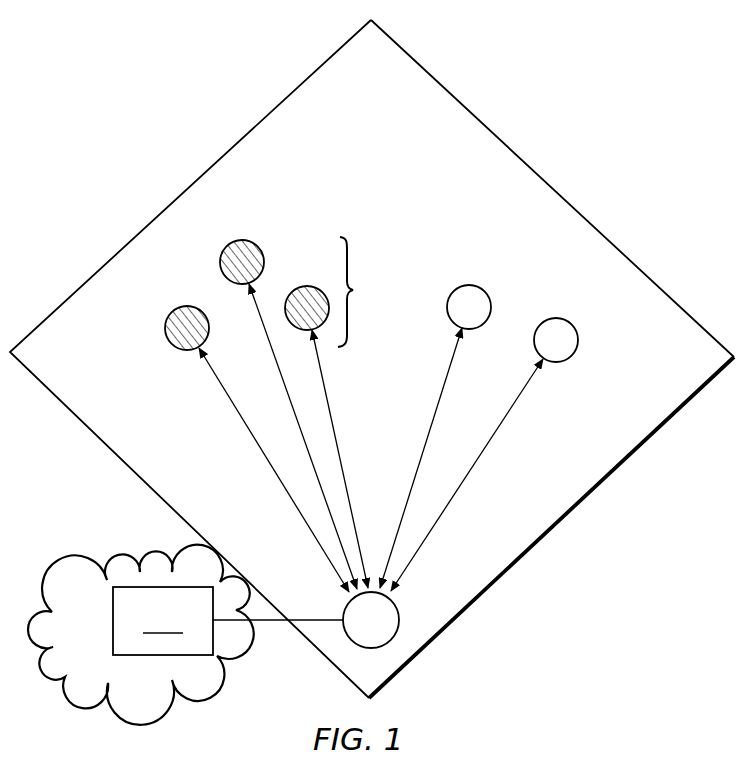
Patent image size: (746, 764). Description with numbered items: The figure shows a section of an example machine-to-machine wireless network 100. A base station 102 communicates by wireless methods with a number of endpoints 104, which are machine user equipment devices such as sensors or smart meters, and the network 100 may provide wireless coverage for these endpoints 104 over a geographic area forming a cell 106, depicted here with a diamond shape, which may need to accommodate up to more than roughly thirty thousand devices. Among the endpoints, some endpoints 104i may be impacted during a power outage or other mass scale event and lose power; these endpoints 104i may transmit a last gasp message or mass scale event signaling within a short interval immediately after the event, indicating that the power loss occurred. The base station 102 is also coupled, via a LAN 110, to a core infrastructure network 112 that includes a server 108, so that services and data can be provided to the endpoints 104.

The machine-to-machine wireless network 100 is at (224, 70).
The base station 102 is at (399, 611).
The endpoints 104 is at (175, 306).
The impacted endpoints 104i is at (370, 292).
The cell 106 is at (537, 172).
The server 108 is at (163, 621).
The LAN 110 is at (257, 622).
The core infrastructure network 112 is at (125, 702).